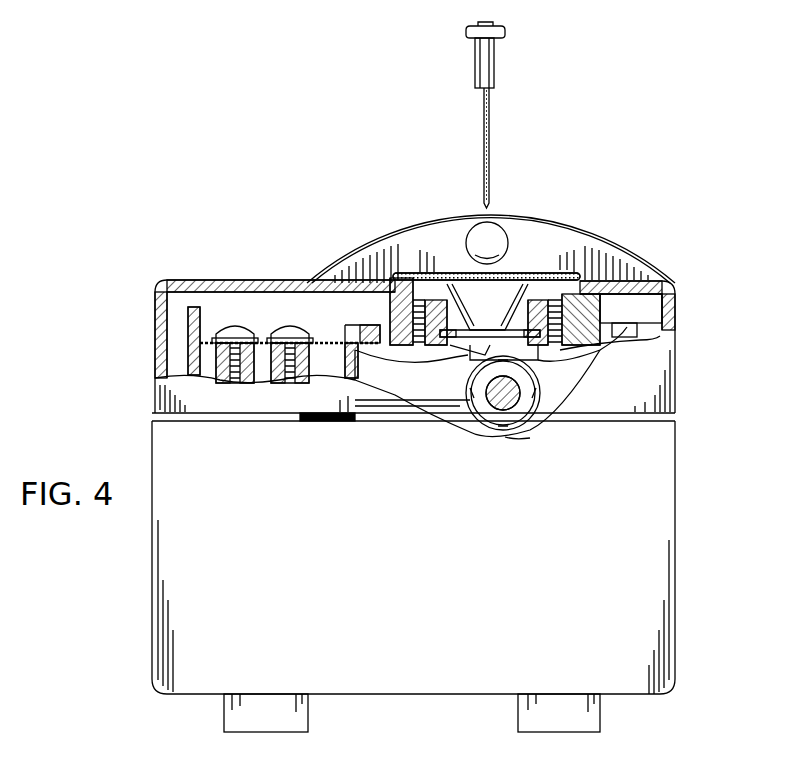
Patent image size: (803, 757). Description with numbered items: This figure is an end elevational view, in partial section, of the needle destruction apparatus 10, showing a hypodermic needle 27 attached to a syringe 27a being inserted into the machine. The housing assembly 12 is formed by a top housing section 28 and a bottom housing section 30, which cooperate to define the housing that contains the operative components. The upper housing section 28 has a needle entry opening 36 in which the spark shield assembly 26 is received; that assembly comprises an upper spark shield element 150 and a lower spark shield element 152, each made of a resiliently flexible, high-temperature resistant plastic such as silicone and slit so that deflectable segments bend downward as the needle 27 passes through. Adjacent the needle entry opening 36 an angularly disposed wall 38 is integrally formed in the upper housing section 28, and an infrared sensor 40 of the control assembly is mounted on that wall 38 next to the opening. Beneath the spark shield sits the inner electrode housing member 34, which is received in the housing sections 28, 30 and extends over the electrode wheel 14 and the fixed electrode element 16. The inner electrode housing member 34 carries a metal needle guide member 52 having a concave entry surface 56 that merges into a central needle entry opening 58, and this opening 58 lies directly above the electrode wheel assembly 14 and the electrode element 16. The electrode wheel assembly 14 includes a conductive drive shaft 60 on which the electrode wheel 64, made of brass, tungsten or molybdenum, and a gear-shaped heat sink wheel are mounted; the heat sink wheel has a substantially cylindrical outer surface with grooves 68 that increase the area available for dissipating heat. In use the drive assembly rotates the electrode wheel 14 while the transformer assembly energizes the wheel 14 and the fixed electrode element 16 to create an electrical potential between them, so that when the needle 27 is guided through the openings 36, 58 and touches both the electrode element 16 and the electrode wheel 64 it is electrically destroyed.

The apparatus 10 is at (176, 237).
The housing assembly 12 is at (634, 557).
The rotatable electrode wheel 14 is at (540, 393).
The fixed electrode element 16 is at (398, 337).
The spark shield assembly 26 is at (584, 267).
The hypodermic needle 27 is at (490, 145).
The syringe 27a is at (494, 68).
The top housing section 28 is at (383, 238).
The bottom housing section 30 is at (643, 508).
The inner electrode housing member 34 is at (602, 345).
The needle entry opening 36 is at (370, 278).
The angularly disposed wall 38 is at (543, 243).
The infrared sensor 40 is at (500, 232).
The needle guide member 52 is at (600, 322).
The concave entry surface 56 is at (457, 274).
The needle entry opening 58 is at (662, 291).
The drive shaft 60 is at (525, 422).
The electrode wheel 64 is at (548, 383).
The grooves 68 is at (505, 438).
The upper spark shield element 150 is at (560, 272).
The lower spark shield element 152 is at (578, 268).